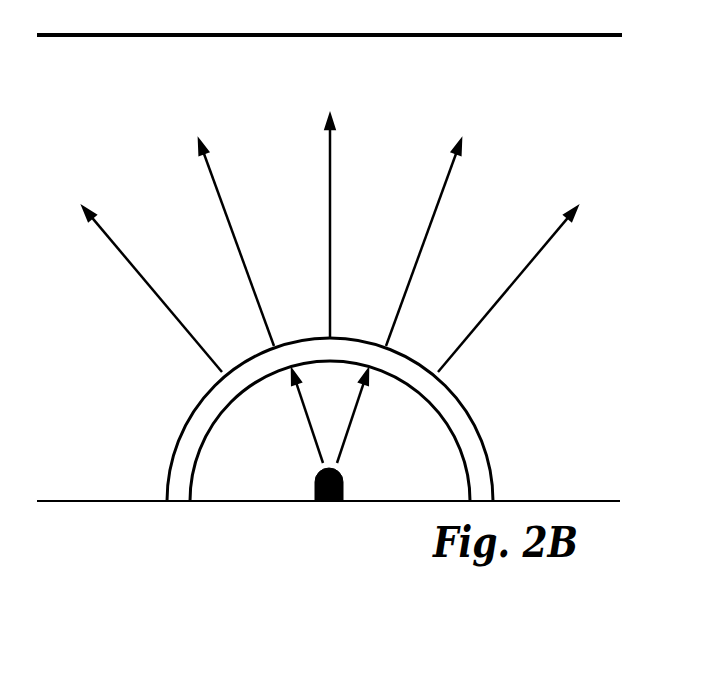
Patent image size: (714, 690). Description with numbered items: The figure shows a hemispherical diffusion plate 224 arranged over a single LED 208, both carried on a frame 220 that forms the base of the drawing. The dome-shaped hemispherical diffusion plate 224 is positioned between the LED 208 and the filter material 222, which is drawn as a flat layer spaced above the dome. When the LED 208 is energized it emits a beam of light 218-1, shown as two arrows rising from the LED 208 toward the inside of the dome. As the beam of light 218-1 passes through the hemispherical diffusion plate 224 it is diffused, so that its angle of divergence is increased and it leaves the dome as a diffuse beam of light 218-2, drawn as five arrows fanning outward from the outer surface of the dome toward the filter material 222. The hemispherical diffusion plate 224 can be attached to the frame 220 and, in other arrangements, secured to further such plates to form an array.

The filter material 222 is at (557, 35).
The frame 220 is at (117, 501).
The hemispherical diffusion plate 224 is at (462, 418).
The LED 208 is at (343, 485).
The beam of light 218-1 is at (298, 408).
The diffuse beam of light 218-2 is at (130, 270).